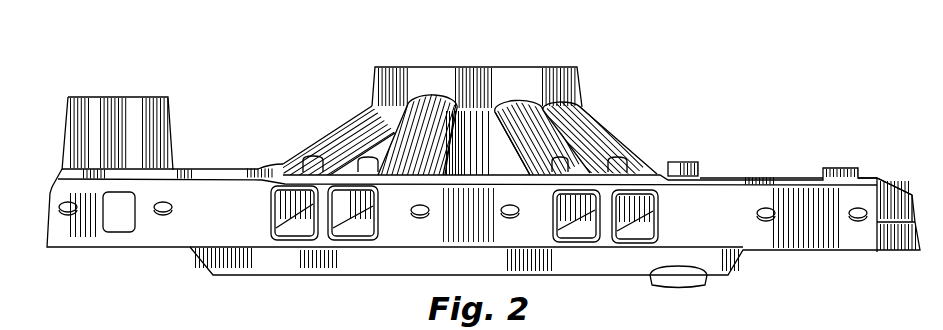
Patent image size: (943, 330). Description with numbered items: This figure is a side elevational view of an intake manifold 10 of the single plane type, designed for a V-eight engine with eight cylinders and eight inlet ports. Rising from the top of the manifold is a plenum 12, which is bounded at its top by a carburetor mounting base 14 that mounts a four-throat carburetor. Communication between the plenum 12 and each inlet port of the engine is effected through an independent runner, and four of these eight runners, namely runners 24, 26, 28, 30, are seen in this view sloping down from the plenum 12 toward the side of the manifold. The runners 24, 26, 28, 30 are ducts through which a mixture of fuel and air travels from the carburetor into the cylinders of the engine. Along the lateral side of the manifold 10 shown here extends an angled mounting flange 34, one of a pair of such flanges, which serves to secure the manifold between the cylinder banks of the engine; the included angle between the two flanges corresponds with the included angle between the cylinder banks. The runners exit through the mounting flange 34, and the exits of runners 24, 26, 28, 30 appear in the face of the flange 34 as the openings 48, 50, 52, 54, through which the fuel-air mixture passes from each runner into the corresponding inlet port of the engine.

The intake manifold 10 is at (716, 158).
The plenum 12 is at (447, 80).
The carburetor mounting base 14 is at (578, 74).
The runner 24 is at (614, 126).
The runner 26 is at (522, 108).
The runner 28 is at (403, 98).
The runner 30 is at (357, 126).
The mounting flange 34 is at (730, 203).
The runner exit 48 is at (657, 222).
The runner exit 50 is at (554, 213).
The runner exit 52 is at (237, 222).
The runner exit 54 is at (270, 218).